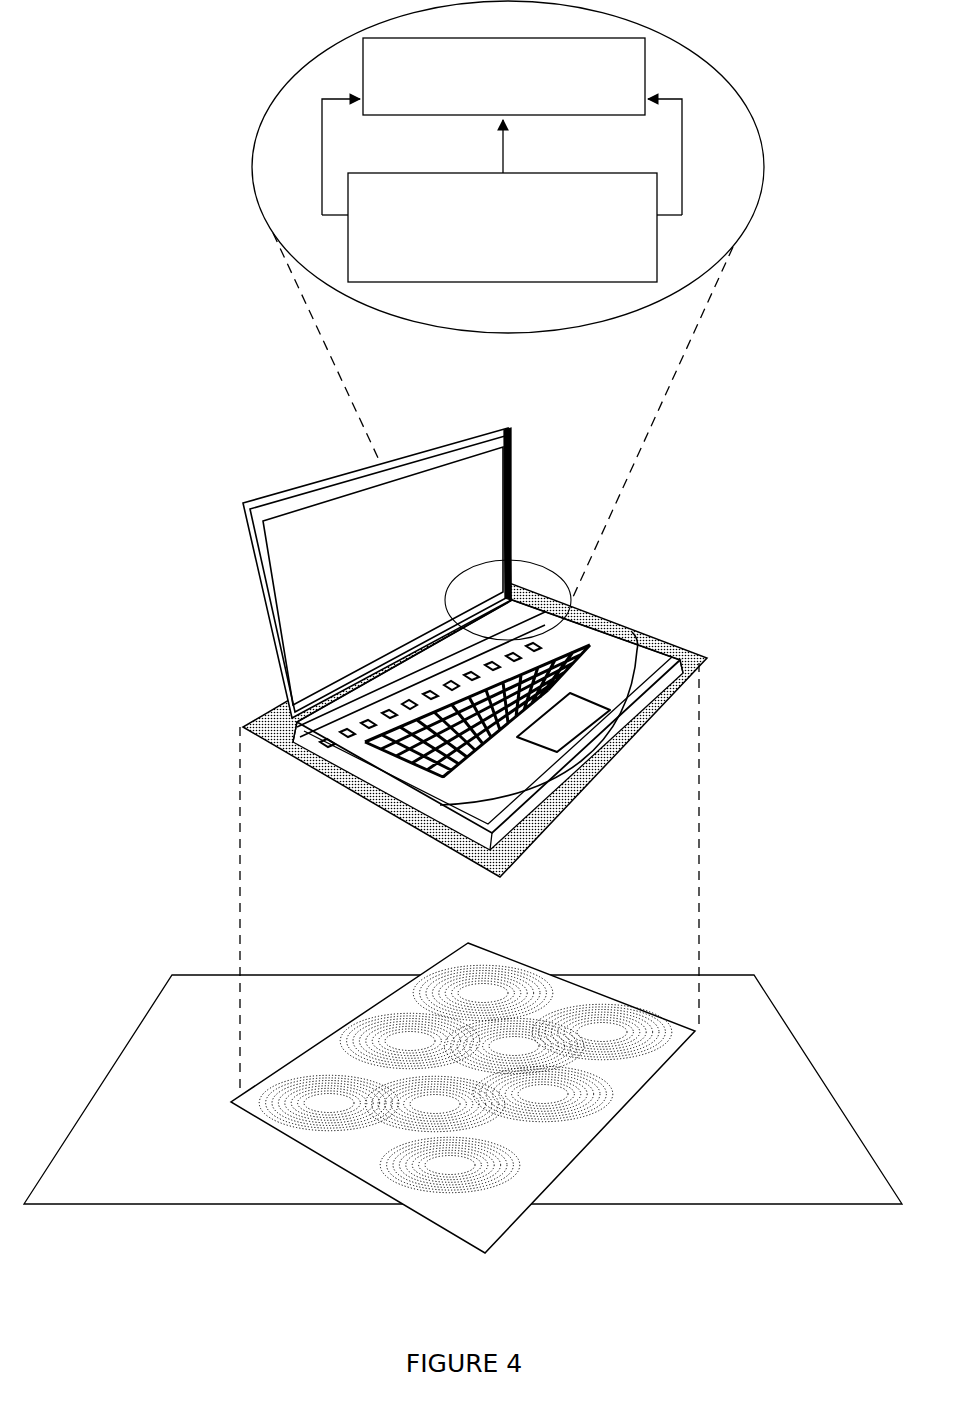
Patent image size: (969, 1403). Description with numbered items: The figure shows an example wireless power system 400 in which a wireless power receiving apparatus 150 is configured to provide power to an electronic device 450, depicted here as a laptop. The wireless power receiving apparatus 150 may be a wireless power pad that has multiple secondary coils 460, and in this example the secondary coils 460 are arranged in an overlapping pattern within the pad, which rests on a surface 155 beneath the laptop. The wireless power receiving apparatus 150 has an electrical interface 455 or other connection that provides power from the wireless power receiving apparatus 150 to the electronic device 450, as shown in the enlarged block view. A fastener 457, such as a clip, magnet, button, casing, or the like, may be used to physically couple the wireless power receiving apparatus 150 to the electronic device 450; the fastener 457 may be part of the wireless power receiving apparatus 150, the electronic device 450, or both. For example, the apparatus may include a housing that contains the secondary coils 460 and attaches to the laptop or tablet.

The wireless power system 400 is at (174, 55).
The electronic device 450 is at (286, 494).
The wireless power receiving apparatus 150 is at (700, 657).
The electrical interface 455 is at (504, 164).
The fastener 457 is at (683, 166).
The surface 155 is at (805, 1033).
The secondary coils 460 is at (432, 1204).